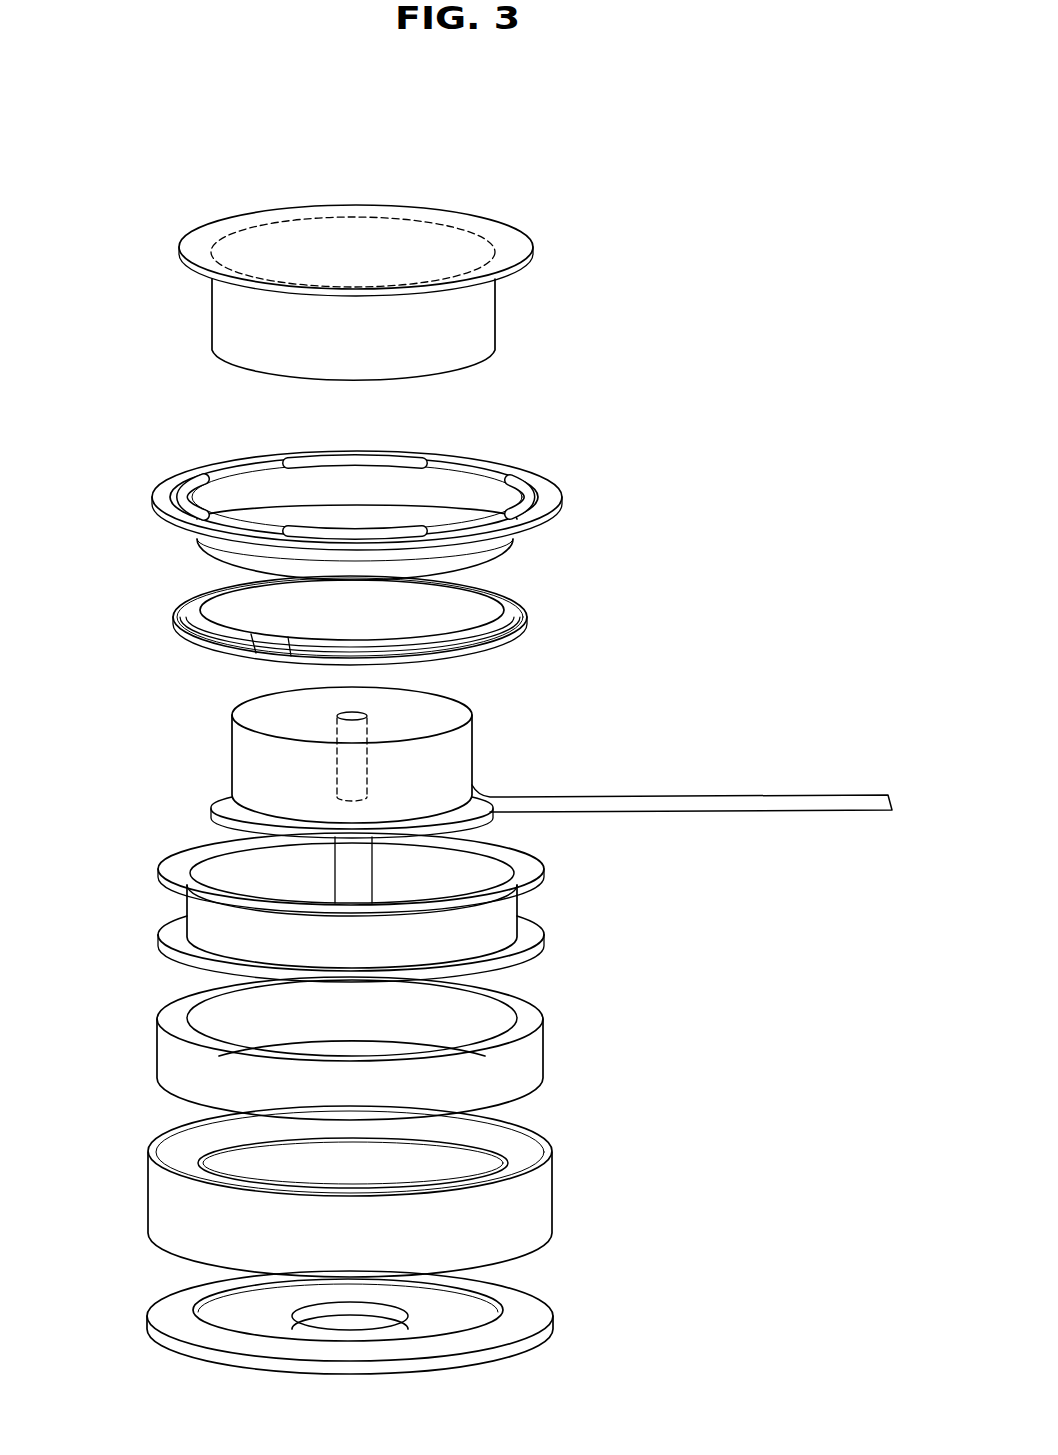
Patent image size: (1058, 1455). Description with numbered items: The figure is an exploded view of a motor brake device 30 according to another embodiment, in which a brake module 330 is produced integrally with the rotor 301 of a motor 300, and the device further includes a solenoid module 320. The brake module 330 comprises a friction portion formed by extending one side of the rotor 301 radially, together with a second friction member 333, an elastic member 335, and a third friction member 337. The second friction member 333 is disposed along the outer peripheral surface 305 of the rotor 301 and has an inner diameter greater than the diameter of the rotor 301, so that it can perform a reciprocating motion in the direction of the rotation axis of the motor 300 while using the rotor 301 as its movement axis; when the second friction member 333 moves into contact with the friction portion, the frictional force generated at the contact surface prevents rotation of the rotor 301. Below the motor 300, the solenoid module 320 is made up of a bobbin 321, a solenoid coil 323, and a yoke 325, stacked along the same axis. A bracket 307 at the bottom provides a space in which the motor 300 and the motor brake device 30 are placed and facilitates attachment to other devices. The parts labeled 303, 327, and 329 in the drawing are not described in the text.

The motor brake device 30 is at (120, 158).
The motor 300 is at (172, 757).
The rotor 301 is at (616, 224).
The cover top plate 303 is at (466, 253).
The outer peripheral surface 305 is at (483, 318).
The bracket 307 is at (552, 1318).
The solenoid module 320 is at (633, 1193).
The bobbin 321 is at (545, 866).
The solenoid coil 323 is at (545, 1048).
The yoke 325 is at (340, 1164).
The yoke bottom 327 is at (203, 1167).
The yoke side wall 329 is at (150, 1167).
The brake module 330 is at (673, 274).
The second friction member 333 is at (353, 403).
The elastic member 335 is at (528, 612).
The third friction member 337 is at (413, 457).